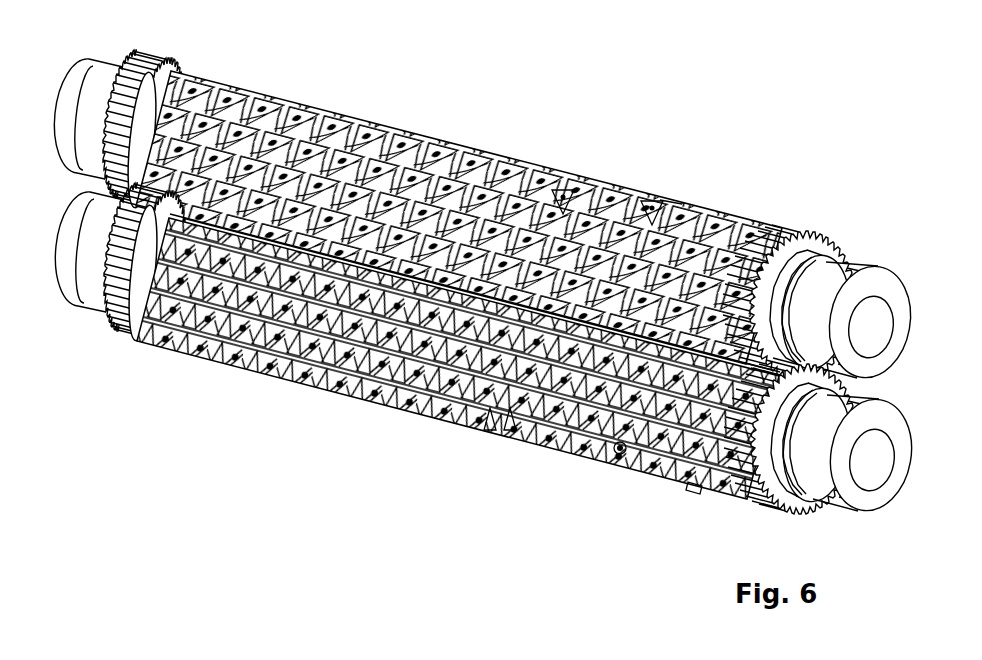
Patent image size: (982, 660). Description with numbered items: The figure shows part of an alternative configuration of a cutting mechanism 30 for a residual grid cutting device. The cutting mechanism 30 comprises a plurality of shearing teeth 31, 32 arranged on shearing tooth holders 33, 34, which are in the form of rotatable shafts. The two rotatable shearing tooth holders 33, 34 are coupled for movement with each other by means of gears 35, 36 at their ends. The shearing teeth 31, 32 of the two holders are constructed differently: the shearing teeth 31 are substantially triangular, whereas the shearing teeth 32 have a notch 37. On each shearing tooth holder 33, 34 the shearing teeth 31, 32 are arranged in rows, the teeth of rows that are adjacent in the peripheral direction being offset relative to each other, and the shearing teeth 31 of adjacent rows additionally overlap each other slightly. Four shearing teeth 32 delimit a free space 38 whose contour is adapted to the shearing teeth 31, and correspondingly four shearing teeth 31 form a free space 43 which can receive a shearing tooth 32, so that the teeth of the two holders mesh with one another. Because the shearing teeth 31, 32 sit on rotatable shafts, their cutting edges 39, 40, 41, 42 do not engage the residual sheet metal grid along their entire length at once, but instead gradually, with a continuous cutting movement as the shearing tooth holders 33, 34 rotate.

The cutting mechanism 30 is at (504, 309).
The shearing teeth 31 is at (502, 217).
The shearing teeth 32 is at (504, 376).
The shearing tooth holder 33 is at (884, 450).
The shearing tooth holder 34 is at (884, 316).
The gear 35 is at (817, 233).
The gear 36 is at (762, 512).
The notch 37 is at (695, 487).
The free space 38 is at (620, 448).
The cutting edge 39 is at (652, 203).
The cutting edge 40 is at (670, 203).
The cutting edge 41 is at (490, 417).
The cutting edge 42 is at (510, 417).
The free space 43 is at (563, 192).